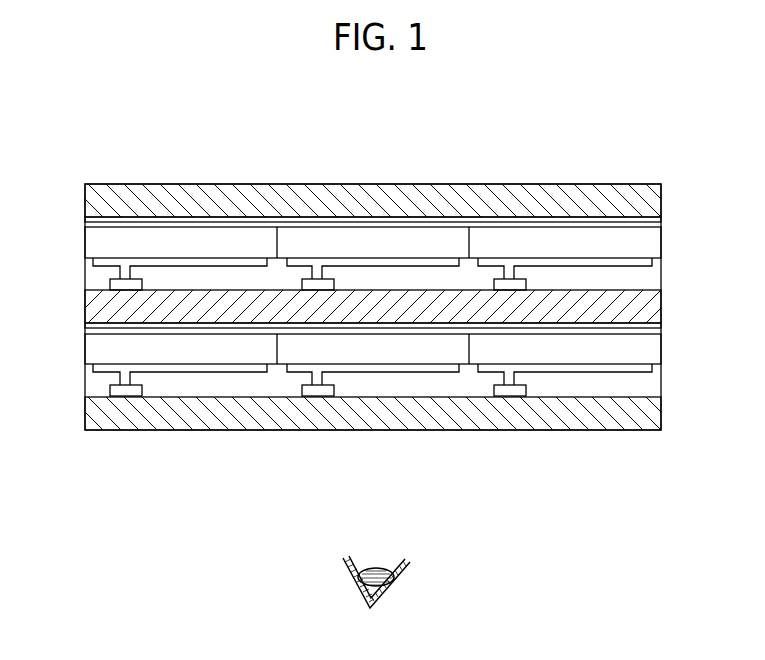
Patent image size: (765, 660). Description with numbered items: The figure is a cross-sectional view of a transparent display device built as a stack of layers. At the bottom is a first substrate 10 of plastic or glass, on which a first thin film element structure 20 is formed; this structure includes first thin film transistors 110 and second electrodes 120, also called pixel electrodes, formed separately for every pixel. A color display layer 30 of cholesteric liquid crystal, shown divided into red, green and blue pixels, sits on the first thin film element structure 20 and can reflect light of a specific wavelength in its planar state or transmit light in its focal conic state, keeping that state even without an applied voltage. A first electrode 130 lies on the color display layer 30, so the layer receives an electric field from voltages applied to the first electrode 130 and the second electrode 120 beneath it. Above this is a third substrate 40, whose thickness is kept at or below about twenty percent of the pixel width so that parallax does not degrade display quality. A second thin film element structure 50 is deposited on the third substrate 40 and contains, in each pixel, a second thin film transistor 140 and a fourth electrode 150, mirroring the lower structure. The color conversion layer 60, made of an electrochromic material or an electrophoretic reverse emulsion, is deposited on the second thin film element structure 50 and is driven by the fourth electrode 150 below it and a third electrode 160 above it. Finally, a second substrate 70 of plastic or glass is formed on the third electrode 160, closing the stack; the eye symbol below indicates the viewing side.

The first substrate 10 is at (648, 414).
The first thin film element structure 20 is at (395, 419).
The color display layer 30 is at (648, 348).
The third substrate 40 is at (648, 307).
The second thin film element structure 50 is at (361, 268).
The color conversion layer 60 is at (648, 242).
The second substrate 70 is at (648, 195).
The first thin film transistor 110 is at (128, 394).
The second electrode 120 is at (221, 371).
The first electrode 130 is at (90, 329).
The second thin film transistor 140 is at (115, 285).
The fourth electrode 150 is at (105, 263).
The third electrode 160 is at (90, 221).